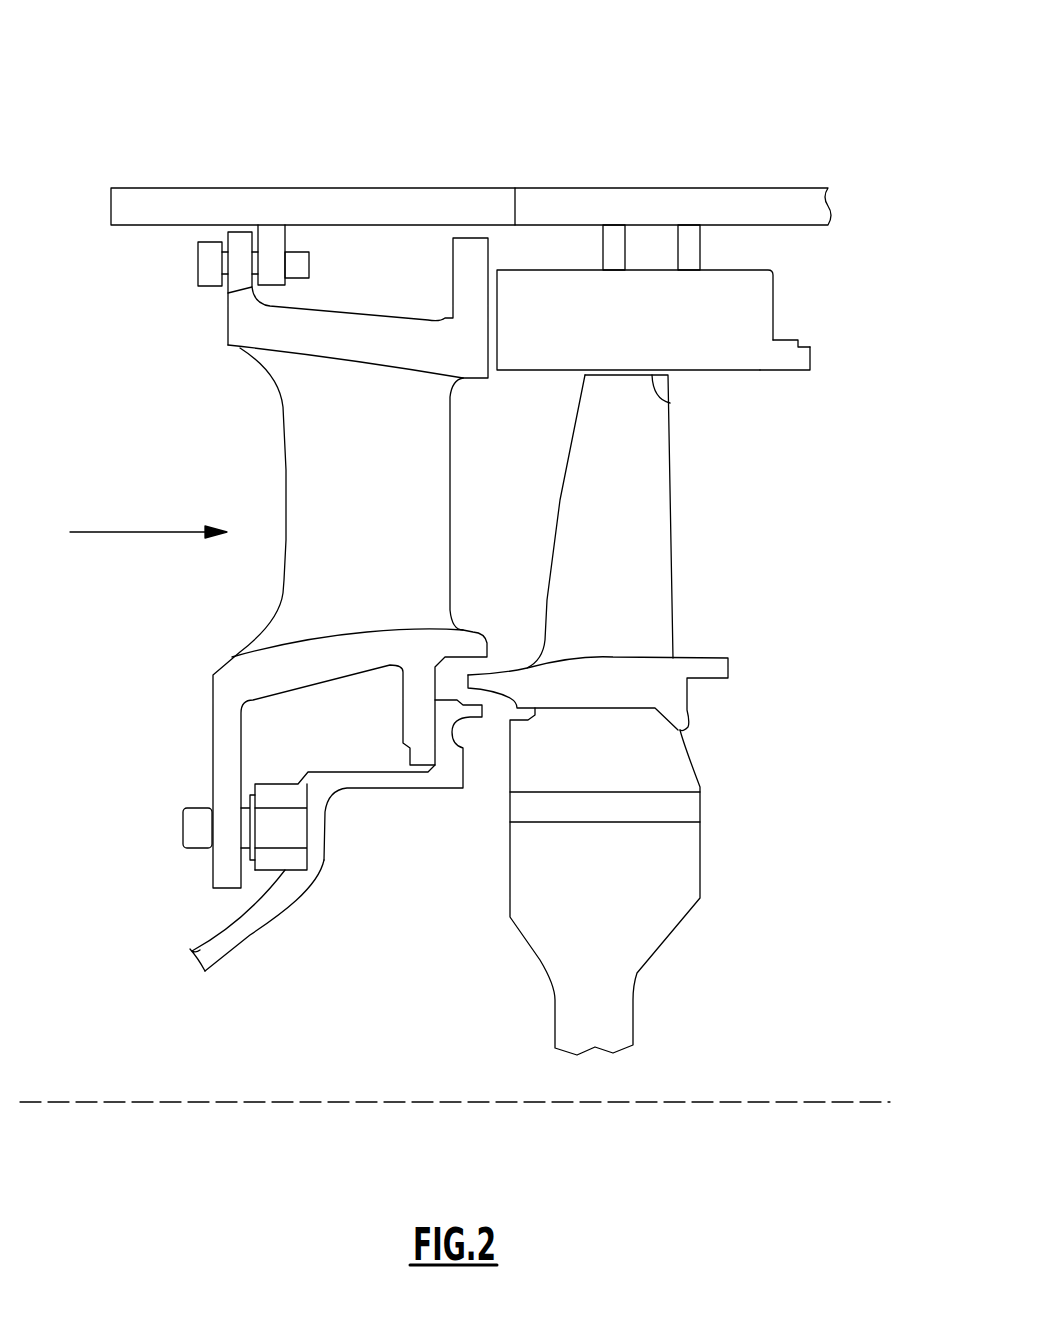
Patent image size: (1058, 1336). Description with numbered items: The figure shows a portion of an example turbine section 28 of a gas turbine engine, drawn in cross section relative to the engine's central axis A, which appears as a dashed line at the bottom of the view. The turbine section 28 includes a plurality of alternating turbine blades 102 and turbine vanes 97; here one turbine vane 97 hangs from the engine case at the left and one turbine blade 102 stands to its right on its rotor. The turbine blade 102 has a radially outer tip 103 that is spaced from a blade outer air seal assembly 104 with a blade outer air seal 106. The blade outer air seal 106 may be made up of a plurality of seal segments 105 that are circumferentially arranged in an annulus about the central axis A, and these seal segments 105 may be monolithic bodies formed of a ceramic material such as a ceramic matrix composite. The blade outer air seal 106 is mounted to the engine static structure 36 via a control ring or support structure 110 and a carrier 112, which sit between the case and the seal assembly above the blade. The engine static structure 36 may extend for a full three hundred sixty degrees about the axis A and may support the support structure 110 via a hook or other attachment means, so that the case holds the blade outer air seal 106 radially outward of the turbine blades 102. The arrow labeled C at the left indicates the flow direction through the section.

The turbine section 28 is at (753, 76).
The engine static structure 36 is at (177, 207).
The turbine vane 97 is at (458, 350).
The turbine blade 102 is at (657, 493).
The radially outer tip 103 is at (670, 403).
The blade outer air seal assembly 104 is at (826, 292).
The seal segment 105 is at (796, 346).
The blade outer air seal 106 is at (793, 360).
The support structure 110 is at (558, 202).
The carrier 112 is at (615, 250).
The core flow path C is at (102, 532).
The central axis A is at (823, 1102).